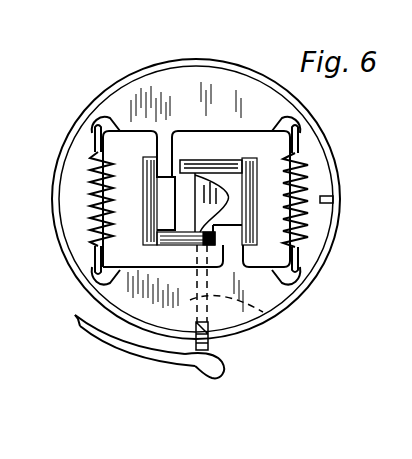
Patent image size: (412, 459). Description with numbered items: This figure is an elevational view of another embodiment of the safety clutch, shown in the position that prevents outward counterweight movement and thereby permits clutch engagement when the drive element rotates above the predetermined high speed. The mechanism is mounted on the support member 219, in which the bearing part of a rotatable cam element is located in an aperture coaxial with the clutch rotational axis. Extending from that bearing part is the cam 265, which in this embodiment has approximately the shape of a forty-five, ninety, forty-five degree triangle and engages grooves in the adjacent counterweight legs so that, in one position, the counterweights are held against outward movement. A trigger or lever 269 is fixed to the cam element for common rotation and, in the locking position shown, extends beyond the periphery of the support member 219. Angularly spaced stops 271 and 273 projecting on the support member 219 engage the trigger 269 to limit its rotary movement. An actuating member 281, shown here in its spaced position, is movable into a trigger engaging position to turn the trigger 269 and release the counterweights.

The support member 219 is at (222, 50).
The cam 265 is at (205, 192).
The trigger or lever 269 is at (270, 315).
The stop 271 is at (197, 322).
The stop 273 is at (333, 199).
The actuating member 281 is at (97, 352).